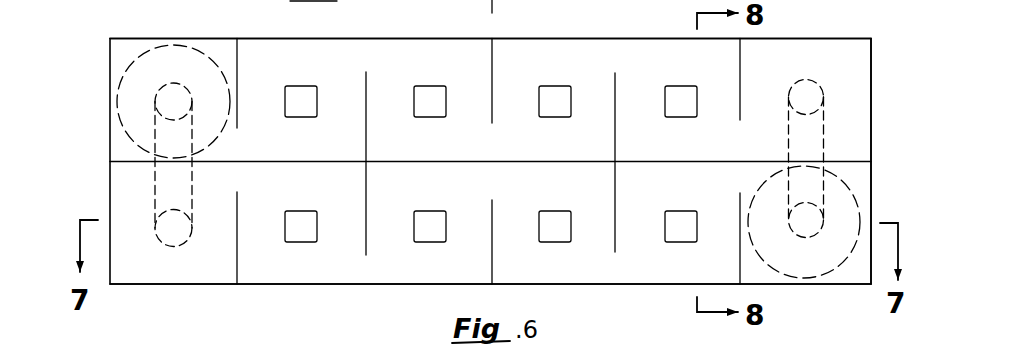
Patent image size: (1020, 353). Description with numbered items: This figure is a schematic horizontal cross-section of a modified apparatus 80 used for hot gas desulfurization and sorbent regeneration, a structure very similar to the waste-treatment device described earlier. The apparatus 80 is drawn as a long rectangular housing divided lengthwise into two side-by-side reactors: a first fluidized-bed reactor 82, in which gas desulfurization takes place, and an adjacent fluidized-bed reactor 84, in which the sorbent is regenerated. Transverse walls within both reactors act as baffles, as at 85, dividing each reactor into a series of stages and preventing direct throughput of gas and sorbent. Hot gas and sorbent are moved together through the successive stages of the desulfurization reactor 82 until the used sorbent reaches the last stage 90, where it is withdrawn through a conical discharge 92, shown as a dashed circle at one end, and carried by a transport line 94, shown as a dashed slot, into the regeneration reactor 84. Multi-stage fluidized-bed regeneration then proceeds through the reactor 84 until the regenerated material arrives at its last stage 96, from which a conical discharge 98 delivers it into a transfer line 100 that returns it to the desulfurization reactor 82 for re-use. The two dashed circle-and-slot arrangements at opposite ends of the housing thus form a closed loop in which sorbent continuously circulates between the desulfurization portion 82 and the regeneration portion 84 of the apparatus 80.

The modified apparatus 80 is at (100, 65).
The first fluidized-bed reactor 82 is at (165, 285).
The adjacent fluidized-bed reactor 84 is at (283, 37).
The baffle 85 is at (237, 228).
The last stage 90 is at (860, 181).
The conical discharge 92 is at (830, 272).
The transport line 94 is at (827, 132).
The last stage 96 is at (118, 142).
The conical discharge 98 is at (118, 88).
The transfer line 100 is at (153, 186).